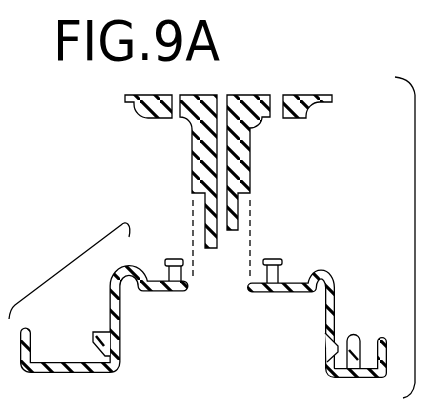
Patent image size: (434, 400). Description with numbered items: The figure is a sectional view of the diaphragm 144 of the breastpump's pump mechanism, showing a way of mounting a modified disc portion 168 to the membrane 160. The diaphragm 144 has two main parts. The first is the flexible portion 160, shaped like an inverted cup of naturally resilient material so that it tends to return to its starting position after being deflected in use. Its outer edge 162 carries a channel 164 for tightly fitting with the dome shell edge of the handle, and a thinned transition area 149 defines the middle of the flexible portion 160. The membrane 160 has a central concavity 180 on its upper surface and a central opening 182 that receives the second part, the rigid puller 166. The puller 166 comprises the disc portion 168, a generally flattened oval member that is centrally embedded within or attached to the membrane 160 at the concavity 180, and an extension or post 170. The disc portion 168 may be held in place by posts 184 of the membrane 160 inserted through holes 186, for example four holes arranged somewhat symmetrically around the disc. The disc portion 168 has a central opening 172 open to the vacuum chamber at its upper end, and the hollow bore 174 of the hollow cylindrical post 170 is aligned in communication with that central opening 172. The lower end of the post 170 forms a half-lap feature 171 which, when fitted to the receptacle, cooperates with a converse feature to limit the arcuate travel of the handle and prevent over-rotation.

The diaphragm 144 is at (340, 259).
The thinned transition area 149 is at (337, 307).
The flexible portion 160 is at (60, 265).
The outer edge 162 is at (92, 330).
The channel 164 is at (102, 325).
The puller 166 is at (145, 86).
The disc portion 168 is at (253, 93).
The post 170 is at (252, 158).
The half-lap feature 171 is at (227, 241).
The central opening 172 is at (229, 85).
The hollow bore 174 is at (220, 212).
The central concavity 180 is at (286, 286).
The central opening 182 is at (217, 290).
The posts 184 is at (176, 259).
The holes 186 is at (177, 91).